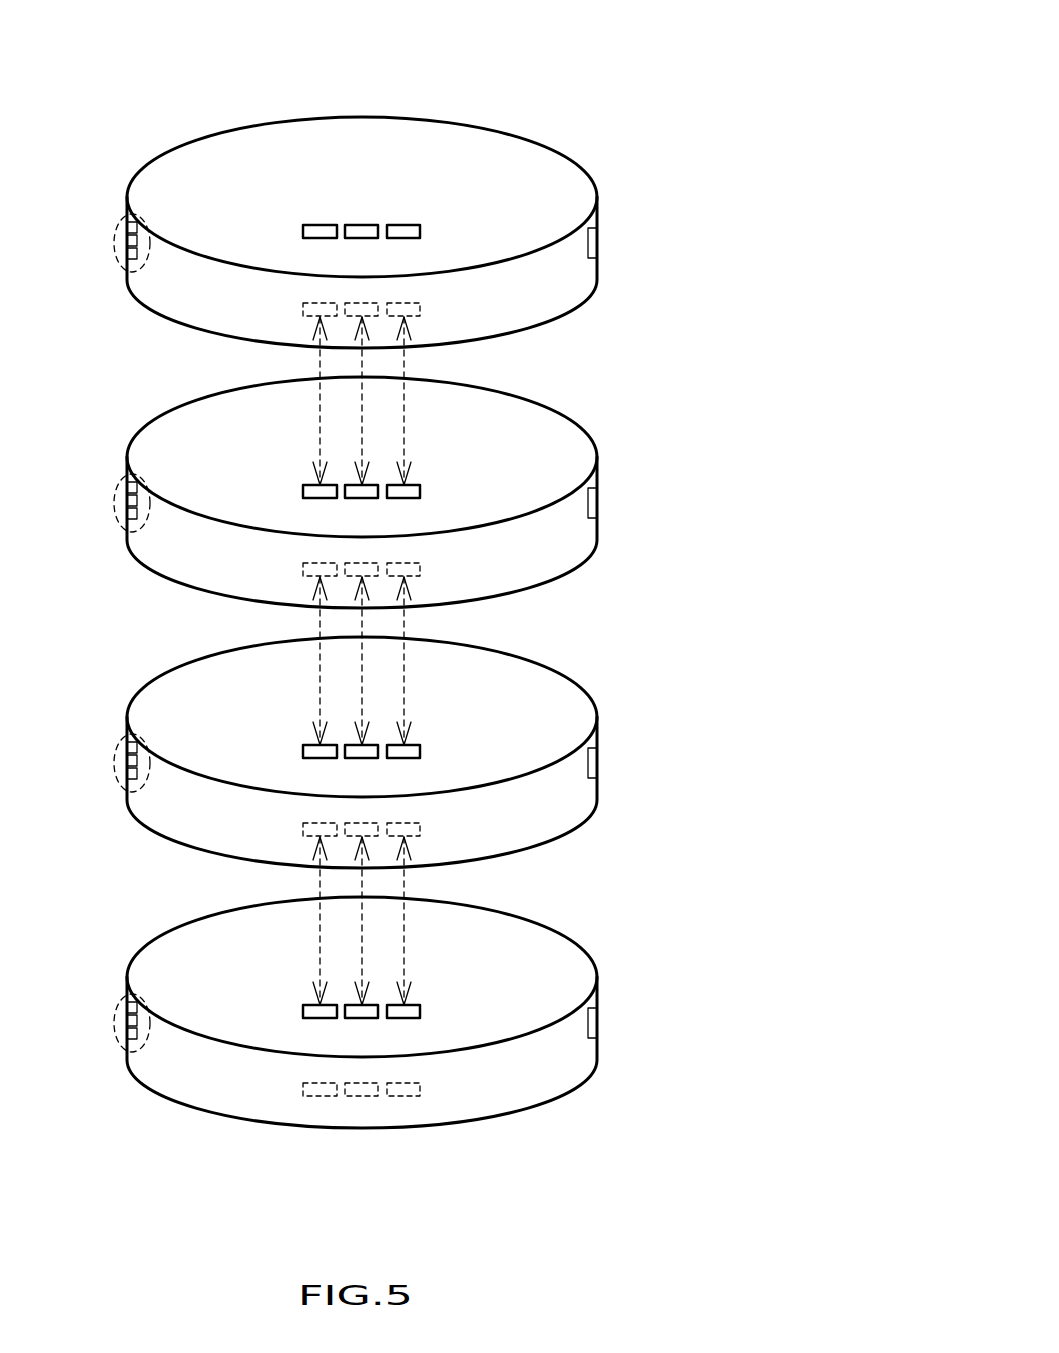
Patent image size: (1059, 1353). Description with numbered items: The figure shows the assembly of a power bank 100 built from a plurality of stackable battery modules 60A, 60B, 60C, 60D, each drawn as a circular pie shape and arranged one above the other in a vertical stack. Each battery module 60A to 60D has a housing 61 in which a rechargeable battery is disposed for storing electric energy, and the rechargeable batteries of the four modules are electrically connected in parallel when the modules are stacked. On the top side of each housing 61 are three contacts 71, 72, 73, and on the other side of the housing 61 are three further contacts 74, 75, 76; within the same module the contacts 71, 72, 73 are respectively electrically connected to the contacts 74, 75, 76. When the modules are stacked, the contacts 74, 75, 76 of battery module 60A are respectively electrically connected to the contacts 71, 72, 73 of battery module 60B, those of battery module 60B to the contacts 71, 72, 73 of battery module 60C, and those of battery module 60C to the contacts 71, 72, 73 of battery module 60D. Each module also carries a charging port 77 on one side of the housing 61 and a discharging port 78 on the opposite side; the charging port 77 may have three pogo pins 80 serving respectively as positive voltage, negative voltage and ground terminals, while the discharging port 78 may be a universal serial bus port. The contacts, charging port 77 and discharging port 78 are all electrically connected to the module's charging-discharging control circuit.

The power bank 100 is at (586, 42).
The battery module 60A is at (668, 138).
The battery module 60B is at (668, 398).
The battery module 60C is at (668, 658).
The battery module 60D is at (668, 918).
The housing 61 is at (537, 160).
The contact 71 is at (320, 225).
The contact 72 is at (362, 225).
The contact 73 is at (404, 225).
The contact 74 is at (305, 308).
The contact 75 is at (357, 307).
The contact 76 is at (420, 305).
The charging port 77 is at (124, 269).
The discharging port 78 is at (598, 241).
The pogo pins 80 is at (128, 224).